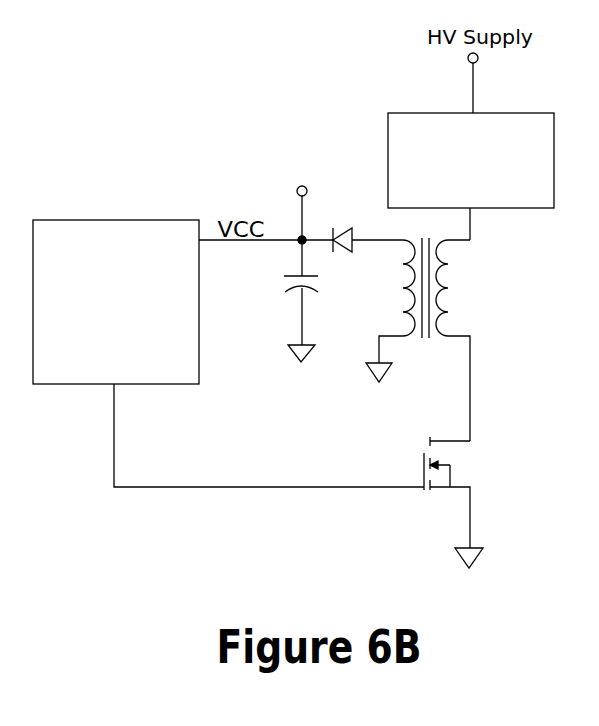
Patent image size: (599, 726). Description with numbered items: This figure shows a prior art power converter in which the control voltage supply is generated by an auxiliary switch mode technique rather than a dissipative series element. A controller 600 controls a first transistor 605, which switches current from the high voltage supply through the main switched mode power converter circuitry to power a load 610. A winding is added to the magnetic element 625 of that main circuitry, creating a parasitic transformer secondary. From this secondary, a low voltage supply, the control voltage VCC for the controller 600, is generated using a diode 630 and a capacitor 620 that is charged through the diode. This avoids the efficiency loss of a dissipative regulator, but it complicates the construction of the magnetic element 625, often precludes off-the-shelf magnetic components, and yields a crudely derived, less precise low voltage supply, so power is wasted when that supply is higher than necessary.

The controller 600 is at (96, 326).
The first transistor 605 is at (422, 452).
The load 610 is at (452, 186).
The capacitor 620 is at (296, 286).
The magnetic element 625 is at (446, 288).
The diode 630 is at (329, 229).